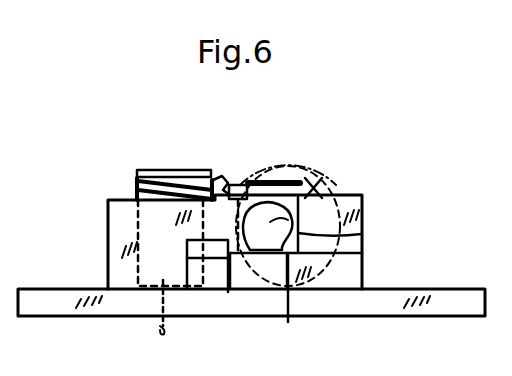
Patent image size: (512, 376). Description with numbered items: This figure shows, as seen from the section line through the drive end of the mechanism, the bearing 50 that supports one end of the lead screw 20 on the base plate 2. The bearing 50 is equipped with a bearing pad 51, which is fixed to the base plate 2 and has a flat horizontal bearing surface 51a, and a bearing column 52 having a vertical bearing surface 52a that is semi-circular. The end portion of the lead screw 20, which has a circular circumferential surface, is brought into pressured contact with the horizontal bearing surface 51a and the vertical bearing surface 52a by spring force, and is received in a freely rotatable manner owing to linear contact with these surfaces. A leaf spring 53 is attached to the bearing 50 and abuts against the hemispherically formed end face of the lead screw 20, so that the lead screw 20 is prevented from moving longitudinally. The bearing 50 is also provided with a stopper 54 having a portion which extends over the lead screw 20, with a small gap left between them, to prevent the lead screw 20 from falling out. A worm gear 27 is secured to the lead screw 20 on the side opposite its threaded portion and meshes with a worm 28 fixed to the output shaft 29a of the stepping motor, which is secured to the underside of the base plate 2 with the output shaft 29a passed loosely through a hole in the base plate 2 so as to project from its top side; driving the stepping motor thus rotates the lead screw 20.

The base plate 2 is at (455, 298).
The lead screw 20 is at (363, 236).
The worm gear 27 is at (318, 194).
The worm 28 is at (168, 171).
The output shaft 29a is at (163, 328).
The bearing 50 is at (373, 147).
The bearing pad 51 is at (357, 282).
The horizontal bearing surface 51a is at (313, 304).
The bearing column 52 is at (365, 210).
The vertical bearing surface 52a is at (315, 192).
The leaf spring 53 is at (229, 240).
The stopper 54 is at (243, 199).